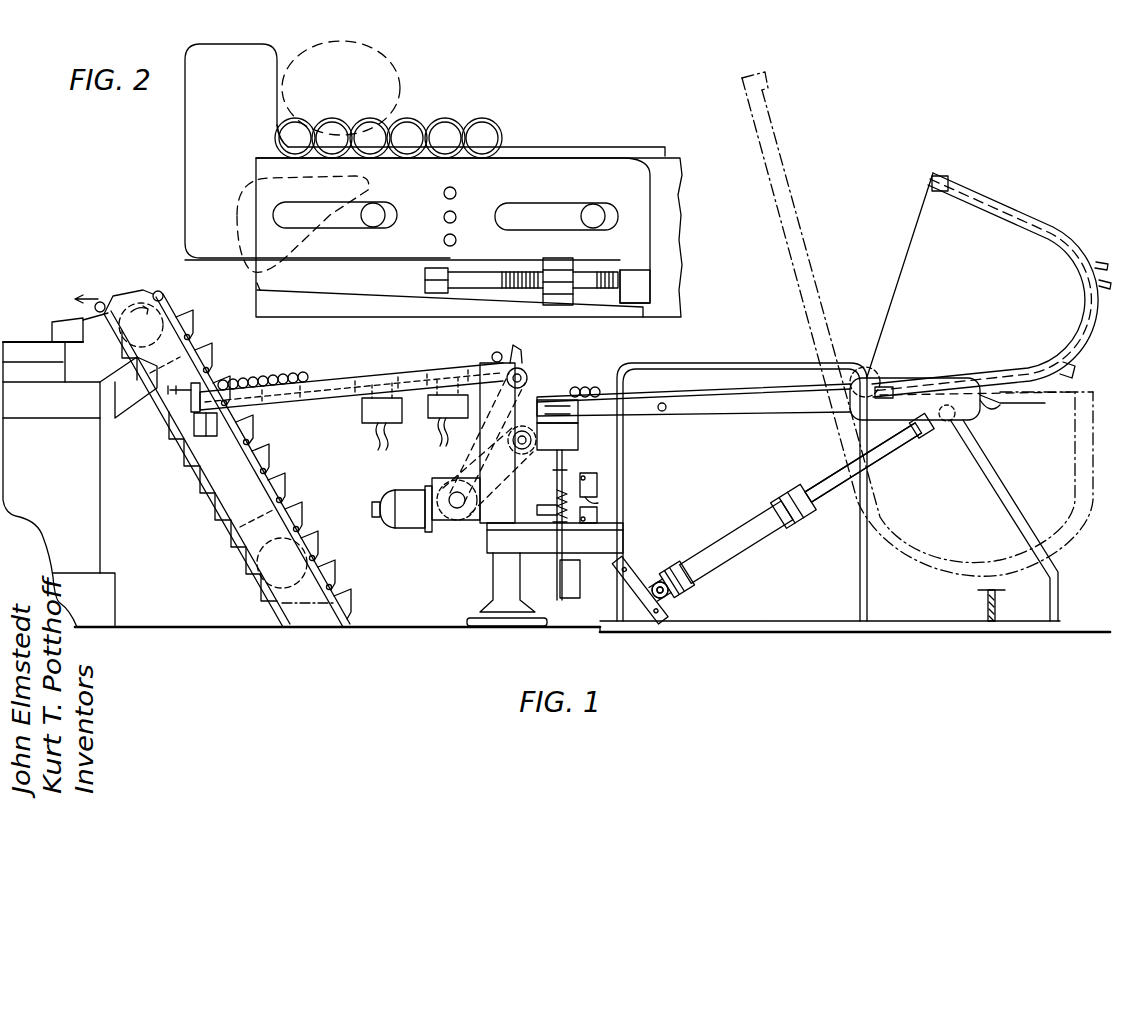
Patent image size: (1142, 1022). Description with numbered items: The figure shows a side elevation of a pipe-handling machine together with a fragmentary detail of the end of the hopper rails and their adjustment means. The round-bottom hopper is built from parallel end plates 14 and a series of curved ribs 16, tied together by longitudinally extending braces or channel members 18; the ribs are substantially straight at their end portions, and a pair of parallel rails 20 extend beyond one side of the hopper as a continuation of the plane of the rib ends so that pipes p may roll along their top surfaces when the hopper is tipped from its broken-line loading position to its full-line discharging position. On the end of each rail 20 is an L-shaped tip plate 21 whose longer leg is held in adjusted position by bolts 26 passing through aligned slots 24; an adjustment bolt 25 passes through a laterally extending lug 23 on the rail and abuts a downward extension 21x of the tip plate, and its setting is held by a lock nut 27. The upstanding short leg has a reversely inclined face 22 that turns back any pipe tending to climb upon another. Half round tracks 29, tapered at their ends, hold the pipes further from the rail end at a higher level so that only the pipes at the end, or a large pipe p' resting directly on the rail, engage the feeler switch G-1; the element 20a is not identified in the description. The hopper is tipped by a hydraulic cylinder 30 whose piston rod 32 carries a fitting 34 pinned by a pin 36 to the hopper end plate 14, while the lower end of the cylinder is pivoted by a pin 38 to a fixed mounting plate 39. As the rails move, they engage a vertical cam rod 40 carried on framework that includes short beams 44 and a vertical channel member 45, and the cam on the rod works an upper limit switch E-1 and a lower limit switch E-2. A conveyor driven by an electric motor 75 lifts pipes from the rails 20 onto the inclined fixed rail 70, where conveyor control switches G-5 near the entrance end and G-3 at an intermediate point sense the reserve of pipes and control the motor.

In FIG. 1, the end plates 14 is at (995, 300).
In FIG. 1, the curved ribs 16 is at (1080, 250).
In FIG. 1, the braces or channel members 18 is at (1104, 262).
In FIG. 2, the rails 20 is at (677, 217).
In FIG. 1, the rails 20 is at (745, 405).
In FIG. 2, the tray bottom plate 20a is at (270, 300).
In FIG. 2, the tip plate 21 is at (190, 148).
In FIG. 2, the downward extension 21x is at (643, 292).
In FIG. 2, the inclined face 22 is at (283, 93).
In FIG. 2, the laterally extending lug 23 is at (563, 262).
In FIG. 2, the aligned slots 24 is at (363, 203).
In FIG. 2, the adjustment bolt 25 is at (482, 278).
In FIG. 2, the bolts 26 is at (383, 212).
In FIG. 2, the lock nut 27 is at (597, 278).
In FIG. 2, the half round tracks 29 is at (565, 155).
In FIG. 1, the hydraulic cylinder 30 is at (737, 553).
In FIG. 1, the piston rod 32 is at (828, 500).
In FIG. 1, the fitting 34 is at (940, 430).
In FIG. 1, the pin 36 is at (955, 420).
In FIG. 1, the pin 38 is at (668, 594).
In FIG. 1, the fixed mounting plate 39 is at (645, 600).
In FIG. 1, the vertical cam rod 40 is at (557, 457).
In FIG. 1, the short parallel beams 44 is at (542, 537).
In FIG. 1, the vertical channel member 45 is at (503, 583).
In FIG. 1, the fixed rail 70 is at (330, 398).
In FIG. 1, the electric motor 75 is at (412, 521).
In FIG. 2, the pipes p is at (388, 119).
In FIG. 1, the pipes p is at (588, 378).
In FIG. 2, the large pipe p' is at (353, 86).
In FIG. 1, the feeler switch G-1 is at (578, 437).
In FIG. 1, the conveyor control switch G-3 is at (382, 416).
In FIG. 1, the conveyor control switch G-5 is at (448, 412).
In FIG. 1, the upper limit switch E-1 is at (597, 483).
In FIG. 1, the lower limit switch E-2 is at (597, 512).